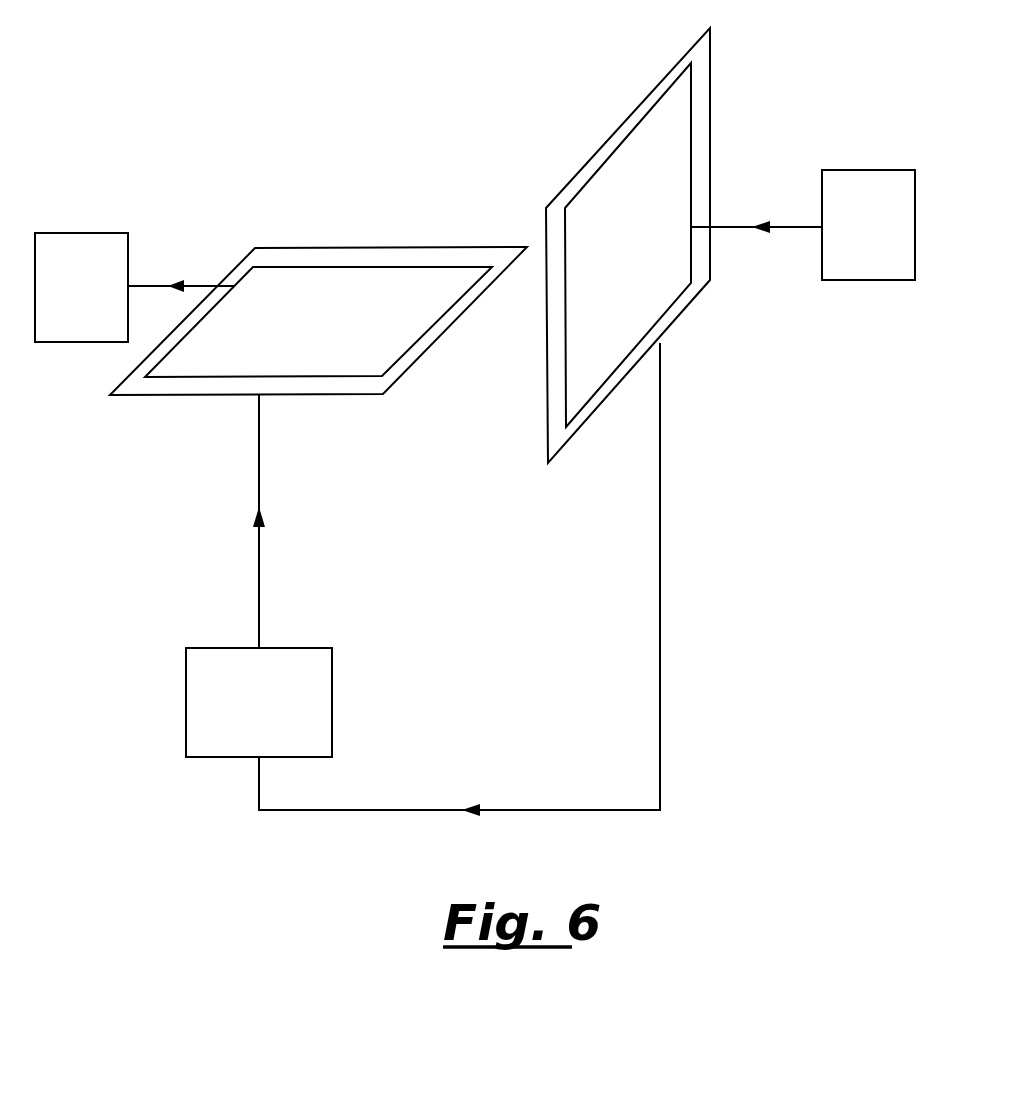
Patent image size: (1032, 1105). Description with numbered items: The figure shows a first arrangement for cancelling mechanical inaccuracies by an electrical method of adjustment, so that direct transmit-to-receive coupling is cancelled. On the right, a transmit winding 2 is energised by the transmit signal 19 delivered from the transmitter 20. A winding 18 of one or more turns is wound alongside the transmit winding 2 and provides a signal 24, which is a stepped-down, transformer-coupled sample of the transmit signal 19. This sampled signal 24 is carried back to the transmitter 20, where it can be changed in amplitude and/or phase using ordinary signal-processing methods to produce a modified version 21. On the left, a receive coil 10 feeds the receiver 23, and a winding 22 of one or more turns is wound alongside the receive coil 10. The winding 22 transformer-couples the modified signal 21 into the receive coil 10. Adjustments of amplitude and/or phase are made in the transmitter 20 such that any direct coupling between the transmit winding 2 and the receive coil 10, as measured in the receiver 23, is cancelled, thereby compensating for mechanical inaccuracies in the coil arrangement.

The transmit winding 2 is at (648, 245).
The receive coil 10 is at (318, 285).
The winding 18 is at (680, 317).
The transmit signal 19 is at (743, 225).
The transmitter 20 is at (550, 463).
The modified version 21 is at (257, 587).
The winding 22 is at (308, 248).
The receiver 23 is at (135, 287).
The signal 24 is at (662, 618).